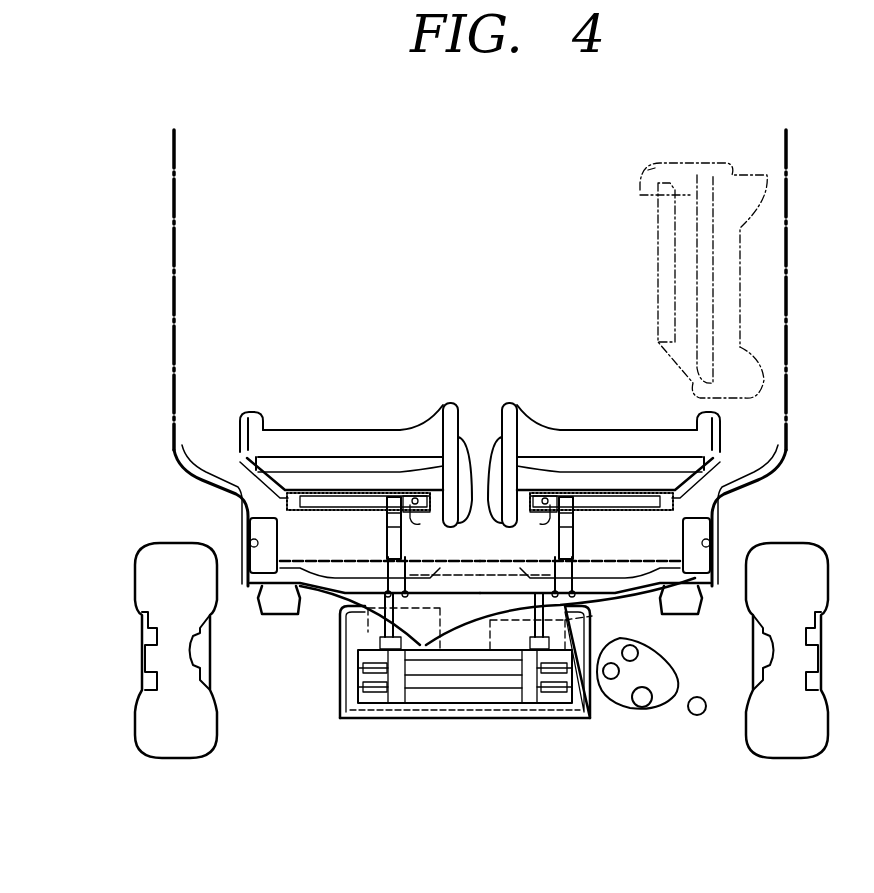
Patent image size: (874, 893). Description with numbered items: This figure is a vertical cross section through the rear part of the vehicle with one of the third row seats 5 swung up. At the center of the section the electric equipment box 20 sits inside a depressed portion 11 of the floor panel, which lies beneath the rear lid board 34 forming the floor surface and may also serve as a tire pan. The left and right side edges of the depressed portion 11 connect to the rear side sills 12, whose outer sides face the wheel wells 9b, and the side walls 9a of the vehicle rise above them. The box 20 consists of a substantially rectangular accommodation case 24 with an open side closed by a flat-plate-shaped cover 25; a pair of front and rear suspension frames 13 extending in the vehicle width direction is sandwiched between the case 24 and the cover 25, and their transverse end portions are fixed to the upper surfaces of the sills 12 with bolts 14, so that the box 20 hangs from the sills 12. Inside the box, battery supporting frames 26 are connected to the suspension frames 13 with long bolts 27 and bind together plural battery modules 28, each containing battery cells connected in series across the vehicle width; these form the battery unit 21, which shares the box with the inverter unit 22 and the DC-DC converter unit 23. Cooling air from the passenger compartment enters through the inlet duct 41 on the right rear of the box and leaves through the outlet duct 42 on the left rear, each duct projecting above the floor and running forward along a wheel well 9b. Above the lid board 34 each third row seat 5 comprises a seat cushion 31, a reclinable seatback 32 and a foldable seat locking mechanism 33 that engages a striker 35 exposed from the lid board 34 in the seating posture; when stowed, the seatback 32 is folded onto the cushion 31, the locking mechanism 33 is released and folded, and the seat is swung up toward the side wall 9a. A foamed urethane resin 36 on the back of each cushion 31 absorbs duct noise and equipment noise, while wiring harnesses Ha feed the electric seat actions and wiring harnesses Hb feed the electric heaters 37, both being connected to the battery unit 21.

The third row seat 5 is at (240, 420).
The side wall 9a is at (174, 232).
The wheel well 9b is at (250, 534).
The depressed portion 11 is at (562, 700).
The rear side sill 12 is at (260, 600).
The suspension frame 13 is at (325, 618).
The bolt 14 is at (270, 575).
The electric equipment box 20 is at (340, 690).
The battery unit 21 is at (475, 690).
The inverter unit 22 is at (372, 632).
The DC-DC converter unit 23 is at (598, 622).
The accommodation case 24 is at (388, 690).
The cover 25 is at (265, 530).
The battery supporting frame 26 is at (402, 690).
The long bolt 27 is at (372, 670).
The battery module 28 is at (372, 690).
The seat cushion 31 is at (328, 470).
The seatback 32 is at (408, 430).
The seat locking mechanism 33 is at (450, 455).
The rear lid board 34 is at (700, 530).
The striker 35 is at (402, 543).
The foamed urethane resin 36 is at (346, 445).
The electric heater 37 is at (244, 443).
The inlet duct 41 is at (716, 500).
The outlet duct 42 is at (246, 500).
The wiring harness Ha is at (240, 456).
The wiring harness Hb is at (176, 455).